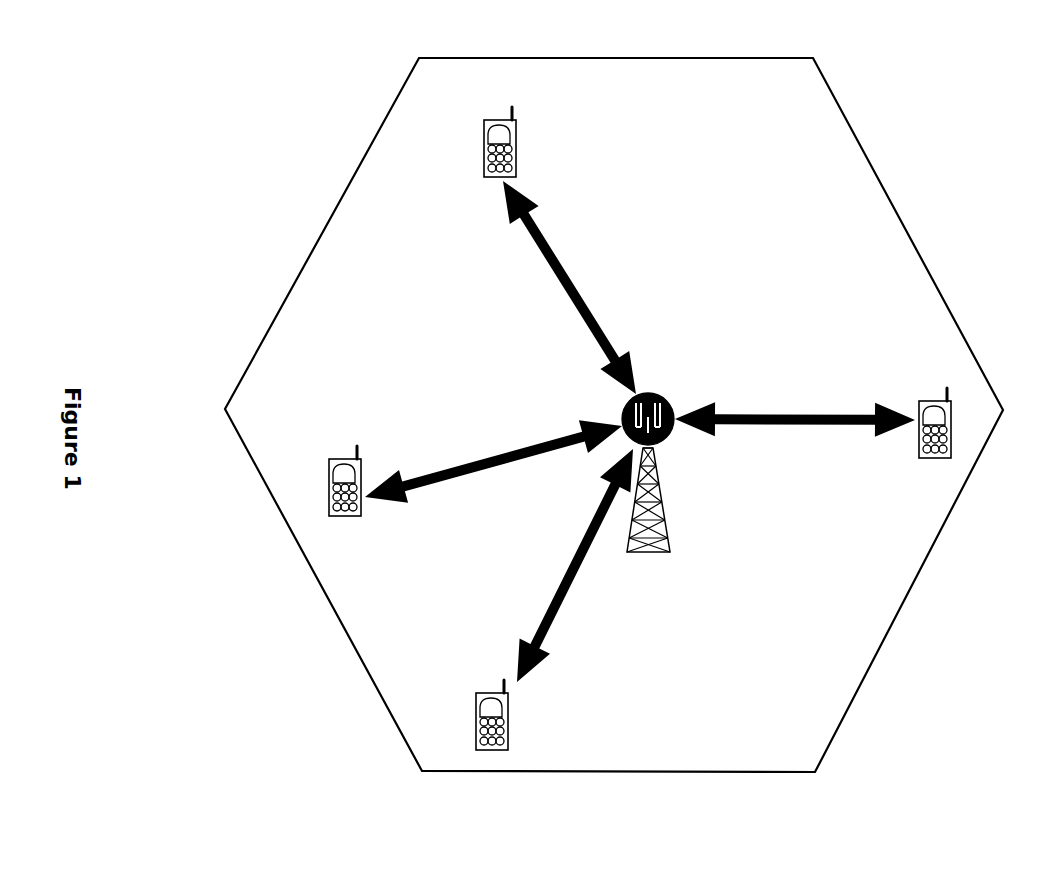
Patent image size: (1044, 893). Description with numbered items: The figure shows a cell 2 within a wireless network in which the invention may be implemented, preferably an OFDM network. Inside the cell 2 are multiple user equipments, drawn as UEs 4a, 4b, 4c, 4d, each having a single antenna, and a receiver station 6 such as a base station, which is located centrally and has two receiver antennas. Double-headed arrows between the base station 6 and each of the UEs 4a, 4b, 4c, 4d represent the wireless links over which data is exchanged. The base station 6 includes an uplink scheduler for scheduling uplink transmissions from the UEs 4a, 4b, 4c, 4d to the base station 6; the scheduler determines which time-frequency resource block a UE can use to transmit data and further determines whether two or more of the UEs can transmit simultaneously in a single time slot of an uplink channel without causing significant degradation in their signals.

The cell 2 is at (900, 217).
The receiver station 6 is at (662, 525).
The UE 4a is at (952, 422).
The UE 4b is at (508, 740).
The UE 4c is at (362, 497).
The UE 4d is at (517, 142).